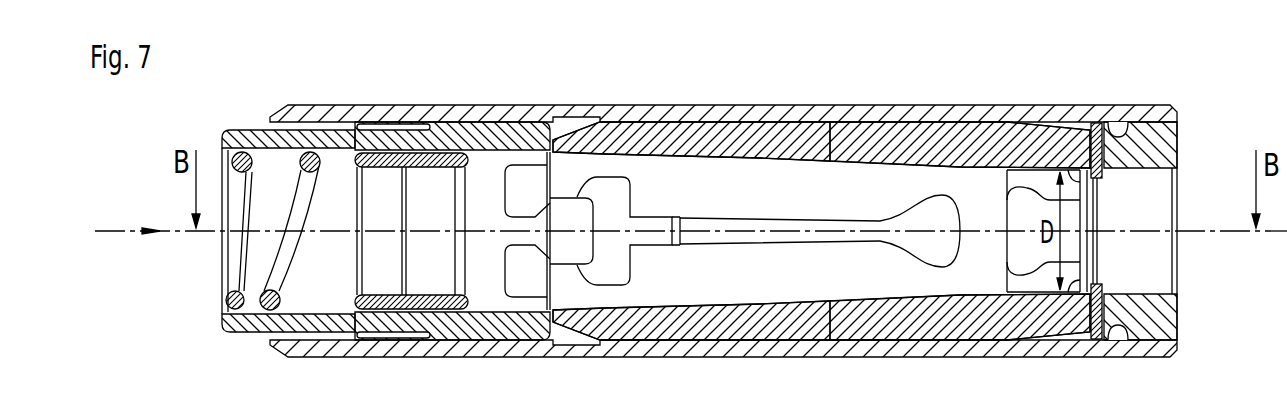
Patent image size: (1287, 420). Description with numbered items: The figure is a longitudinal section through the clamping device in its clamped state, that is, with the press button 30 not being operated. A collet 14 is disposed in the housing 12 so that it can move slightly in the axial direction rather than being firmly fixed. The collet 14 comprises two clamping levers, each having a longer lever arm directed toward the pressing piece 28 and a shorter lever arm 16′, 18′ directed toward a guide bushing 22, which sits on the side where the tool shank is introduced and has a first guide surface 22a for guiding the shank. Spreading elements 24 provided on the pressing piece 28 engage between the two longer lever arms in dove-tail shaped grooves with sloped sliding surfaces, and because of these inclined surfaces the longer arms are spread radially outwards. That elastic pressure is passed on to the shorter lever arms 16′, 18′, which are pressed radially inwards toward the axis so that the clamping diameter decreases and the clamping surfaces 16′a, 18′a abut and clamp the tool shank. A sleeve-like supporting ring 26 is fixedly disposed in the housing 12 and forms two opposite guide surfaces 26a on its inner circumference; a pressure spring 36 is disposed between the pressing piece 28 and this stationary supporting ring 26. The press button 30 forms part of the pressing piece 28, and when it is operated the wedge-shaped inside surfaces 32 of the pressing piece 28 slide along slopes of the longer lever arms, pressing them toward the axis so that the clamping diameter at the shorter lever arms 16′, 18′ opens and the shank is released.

The housing 12 is at (855, 118).
The collet 14 is at (935, 148).
The shorter lever arm 16′ is at (1040, 142).
The clamping surface 16′a is at (1095, 135).
The shorter lever arm 18′ is at (1040, 323).
The clamping surface 18′a is at (1085, 328).
The guide bushing 22 is at (1153, 135).
The first guide surface 22a is at (1158, 192).
The spreading elements 24 is at (574, 217).
The supporting ring 26 is at (470, 158).
The guide surfaces 26a is at (400, 160).
The pressing piece 28 is at (352, 148).
The press button 30 is at (240, 143).
The wedge-shaped inside surfaces 32 is at (533, 167).
The pressure spring 36 is at (292, 203).